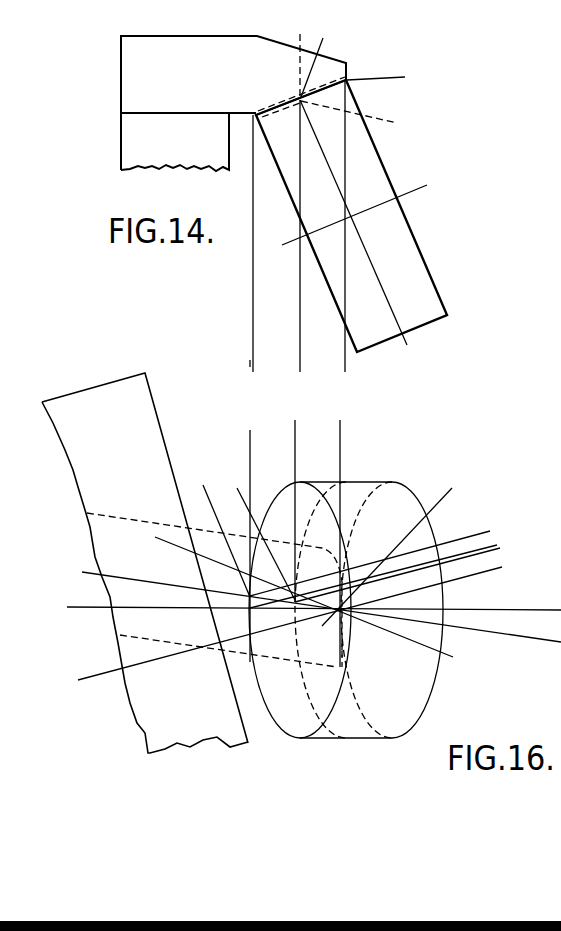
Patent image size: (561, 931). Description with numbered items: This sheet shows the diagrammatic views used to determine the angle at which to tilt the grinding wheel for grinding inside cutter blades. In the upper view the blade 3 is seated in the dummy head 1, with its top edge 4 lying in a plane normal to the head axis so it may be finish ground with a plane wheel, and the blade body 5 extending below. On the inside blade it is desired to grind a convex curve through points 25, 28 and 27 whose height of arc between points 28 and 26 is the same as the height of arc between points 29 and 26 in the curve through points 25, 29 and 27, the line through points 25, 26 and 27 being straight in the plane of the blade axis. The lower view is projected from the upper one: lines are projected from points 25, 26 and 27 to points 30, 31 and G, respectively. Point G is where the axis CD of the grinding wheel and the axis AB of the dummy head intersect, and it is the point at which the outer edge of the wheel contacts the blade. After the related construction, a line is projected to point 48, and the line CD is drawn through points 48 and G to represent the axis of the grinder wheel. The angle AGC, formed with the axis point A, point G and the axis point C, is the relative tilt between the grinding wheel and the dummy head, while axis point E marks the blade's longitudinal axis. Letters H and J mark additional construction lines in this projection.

In FIG. 14, the dummy head 1 is at (140, 138).
In FIG. 16, the dummy head 1 is at (137, 395).
In FIG. 14, the blade 3 is at (138, 82).
In FIG. 16, the blade 3 is at (242, 650).
In FIG. 14, the top edge 4 is at (347, 67).
In FIG. 16, the top edge 4 is at (342, 653).
In FIG. 14, the cutting tool / lens 5 is at (428, 289).
In FIG. 16, the cutting tool / lens 5 is at (390, 488).
In FIG. 14, the point 25 is at (256, 116).
In FIG. 14, the point 26 is at (324, 56).
In FIG. 14, the point 27 is at (391, 72).
In FIG. 14, the point 28 is at (362, 116).
In FIG. 14, the point 29 is at (294, 58).
In FIG. 16, the point 30 is at (218, 531).
In FIG. 16, the point 31 is at (258, 533).
In FIG. 16, the point 48 is at (248, 612).
In FIG. 16, the axis point A is at (282, 629).
In FIG. 16, the axis point C is at (307, 608).
In FIG. 16, the axis point E is at (313, 602).
In FIG. 16, the point G is at (397, 548).
In FIG. 16, the ray H is at (297, 592).
In FIG. 16, the ray J is at (461, 665).